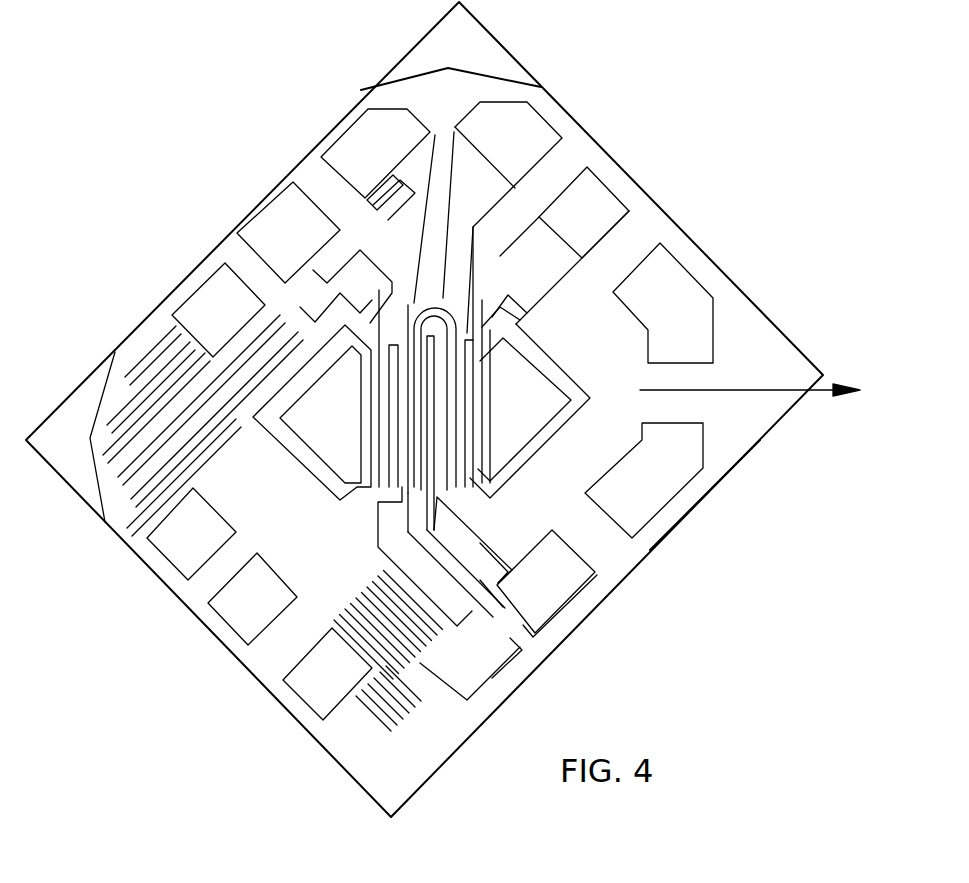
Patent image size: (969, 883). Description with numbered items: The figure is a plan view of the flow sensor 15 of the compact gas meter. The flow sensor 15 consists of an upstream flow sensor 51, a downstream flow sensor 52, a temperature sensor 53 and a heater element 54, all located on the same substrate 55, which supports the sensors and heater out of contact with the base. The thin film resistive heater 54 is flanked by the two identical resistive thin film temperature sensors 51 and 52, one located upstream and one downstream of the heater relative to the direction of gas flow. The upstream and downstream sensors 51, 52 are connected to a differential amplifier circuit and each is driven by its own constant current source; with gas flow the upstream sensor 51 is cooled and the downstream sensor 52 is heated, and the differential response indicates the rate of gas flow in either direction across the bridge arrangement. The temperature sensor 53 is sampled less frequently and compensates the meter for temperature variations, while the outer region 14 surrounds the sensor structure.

The substrate 14 is at (748, 457).
The flow sensor 15 is at (268, 743).
The upstream flow sensor 51 is at (373, 490).
The downstream flow sensor 52 is at (472, 490).
The temperature sensor 53 is at (112, 393).
The heater element 54 is at (433, 330).
The substrate 55 is at (686, 517).